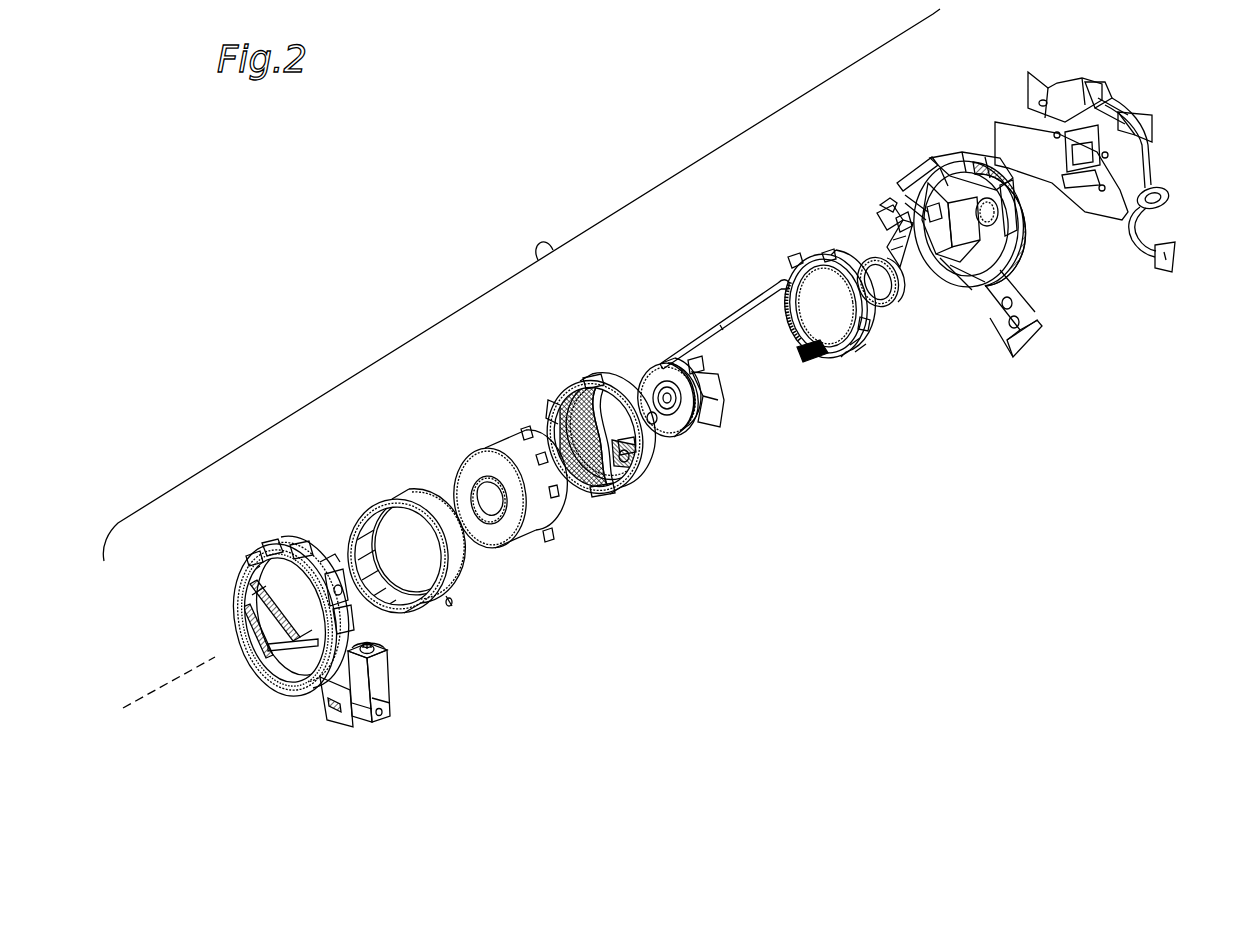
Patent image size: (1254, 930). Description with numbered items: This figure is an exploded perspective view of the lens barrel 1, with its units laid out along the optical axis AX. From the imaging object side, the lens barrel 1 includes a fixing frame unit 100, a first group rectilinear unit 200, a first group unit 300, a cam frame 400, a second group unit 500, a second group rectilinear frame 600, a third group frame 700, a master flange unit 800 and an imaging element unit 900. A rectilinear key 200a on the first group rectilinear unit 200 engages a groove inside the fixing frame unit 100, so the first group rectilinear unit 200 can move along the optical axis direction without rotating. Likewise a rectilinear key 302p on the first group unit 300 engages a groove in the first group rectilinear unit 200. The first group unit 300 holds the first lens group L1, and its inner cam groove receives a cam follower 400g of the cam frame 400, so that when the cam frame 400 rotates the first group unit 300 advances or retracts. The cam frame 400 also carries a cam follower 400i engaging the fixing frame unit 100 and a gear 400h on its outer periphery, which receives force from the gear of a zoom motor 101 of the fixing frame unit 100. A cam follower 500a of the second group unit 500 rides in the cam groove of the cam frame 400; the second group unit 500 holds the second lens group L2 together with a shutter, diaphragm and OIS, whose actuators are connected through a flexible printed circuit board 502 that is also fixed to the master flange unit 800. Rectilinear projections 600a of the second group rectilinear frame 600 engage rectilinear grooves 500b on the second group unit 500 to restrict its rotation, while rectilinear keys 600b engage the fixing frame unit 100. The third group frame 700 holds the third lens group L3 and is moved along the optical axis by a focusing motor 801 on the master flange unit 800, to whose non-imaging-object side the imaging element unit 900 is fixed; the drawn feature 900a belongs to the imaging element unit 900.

The lens barrel 1 is at (521, 285).
The optical axis AX is at (148, 697).
The fixing frame unit 100 is at (339, 651).
The zoom motor 101 is at (378, 681).
The first group rectilinear unit 200 is at (442, 585).
The rectilinear key 200a is at (452, 602).
The first group unit 300 is at (496, 507).
The rectilinear key 302p is at (528, 445).
The first lens group L1 is at (478, 495).
The cam frame 400 is at (621, 438).
The cam follower 400g is at (624, 450).
The gear 400h is at (618, 494).
The cam follower 400i is at (597, 378).
The second group unit 500 is at (712, 356).
The cam follower 500a is at (717, 407).
The rectilinear grooves 500b is at (691, 358).
The flexible printed circuit board 502 is at (747, 314).
The second lens group L2 is at (656, 365).
The second group rectilinear frame 600 is at (824, 301).
The rectilinear projections 600a is at (786, 262).
The rectilinear keys 600b is at (829, 254).
The third group frame 700 is at (897, 255).
The third lens group L3 is at (855, 257).
The master flange unit 800 is at (992, 287).
The focusing motor 801 is at (1005, 210).
The imaging element unit 900 is at (1112, 207).
The flexible printed circuit board connector 900a is at (1112, 163).